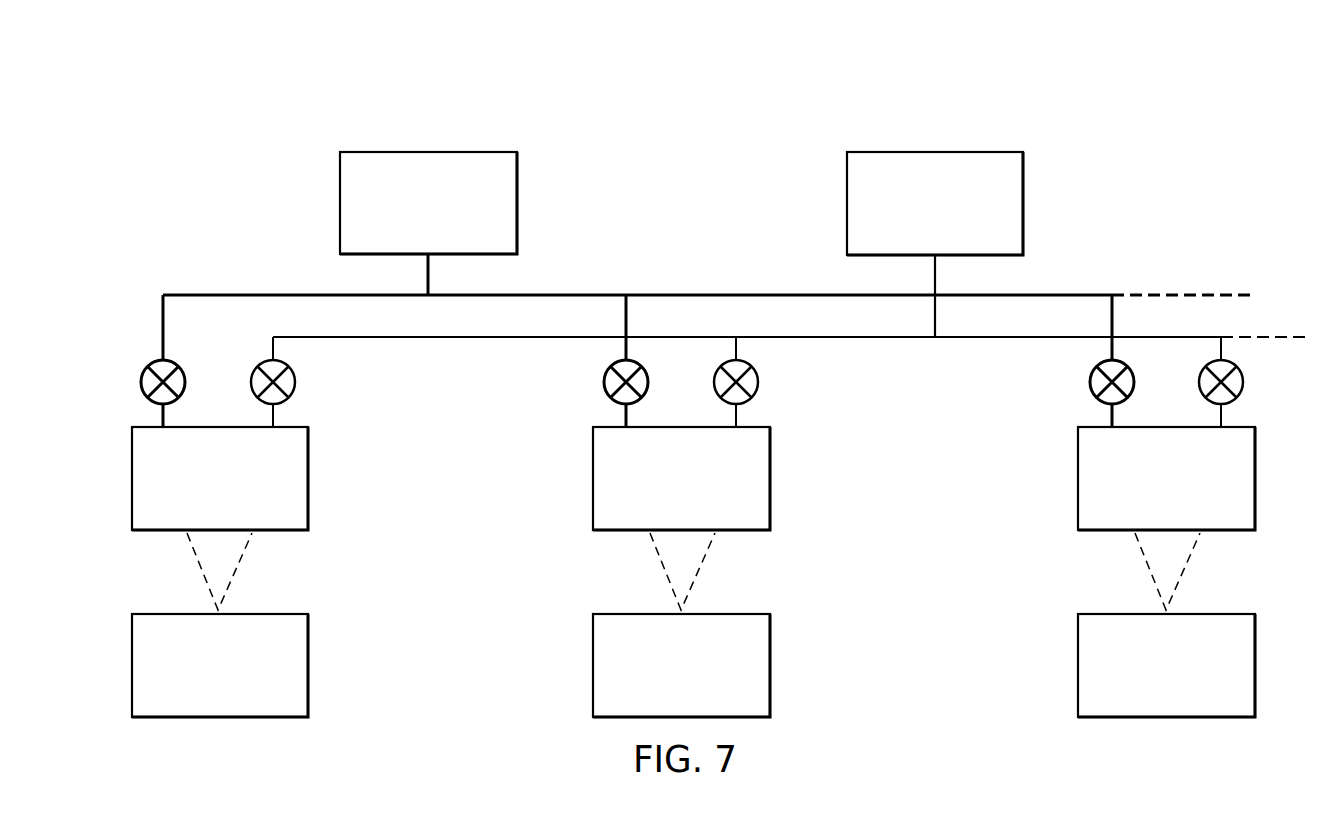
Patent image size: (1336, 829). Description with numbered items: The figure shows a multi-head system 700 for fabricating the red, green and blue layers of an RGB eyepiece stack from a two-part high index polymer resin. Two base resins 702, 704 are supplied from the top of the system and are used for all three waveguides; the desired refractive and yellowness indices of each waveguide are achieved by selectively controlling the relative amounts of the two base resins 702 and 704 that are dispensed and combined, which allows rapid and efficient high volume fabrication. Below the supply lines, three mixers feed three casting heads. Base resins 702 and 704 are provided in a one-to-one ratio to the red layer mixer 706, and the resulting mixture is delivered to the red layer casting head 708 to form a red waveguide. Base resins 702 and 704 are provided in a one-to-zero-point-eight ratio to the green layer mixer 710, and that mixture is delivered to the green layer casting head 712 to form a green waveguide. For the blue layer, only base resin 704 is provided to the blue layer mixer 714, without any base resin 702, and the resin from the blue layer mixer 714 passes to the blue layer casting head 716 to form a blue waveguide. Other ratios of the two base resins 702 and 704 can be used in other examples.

The multi-head system 700 is at (578, 102).
The base resin 702 is at (450, 219).
The base resin 704 is at (957, 219).
The red layer mixer 706 is at (242, 494).
The red layer casting head 708 is at (242, 680).
The green layer mixer 710 is at (704, 494).
The green layer casting head 712 is at (704, 680).
The blue layer mixer 714 is at (1189, 494).
The blue layer casting head 716 is at (1189, 680).